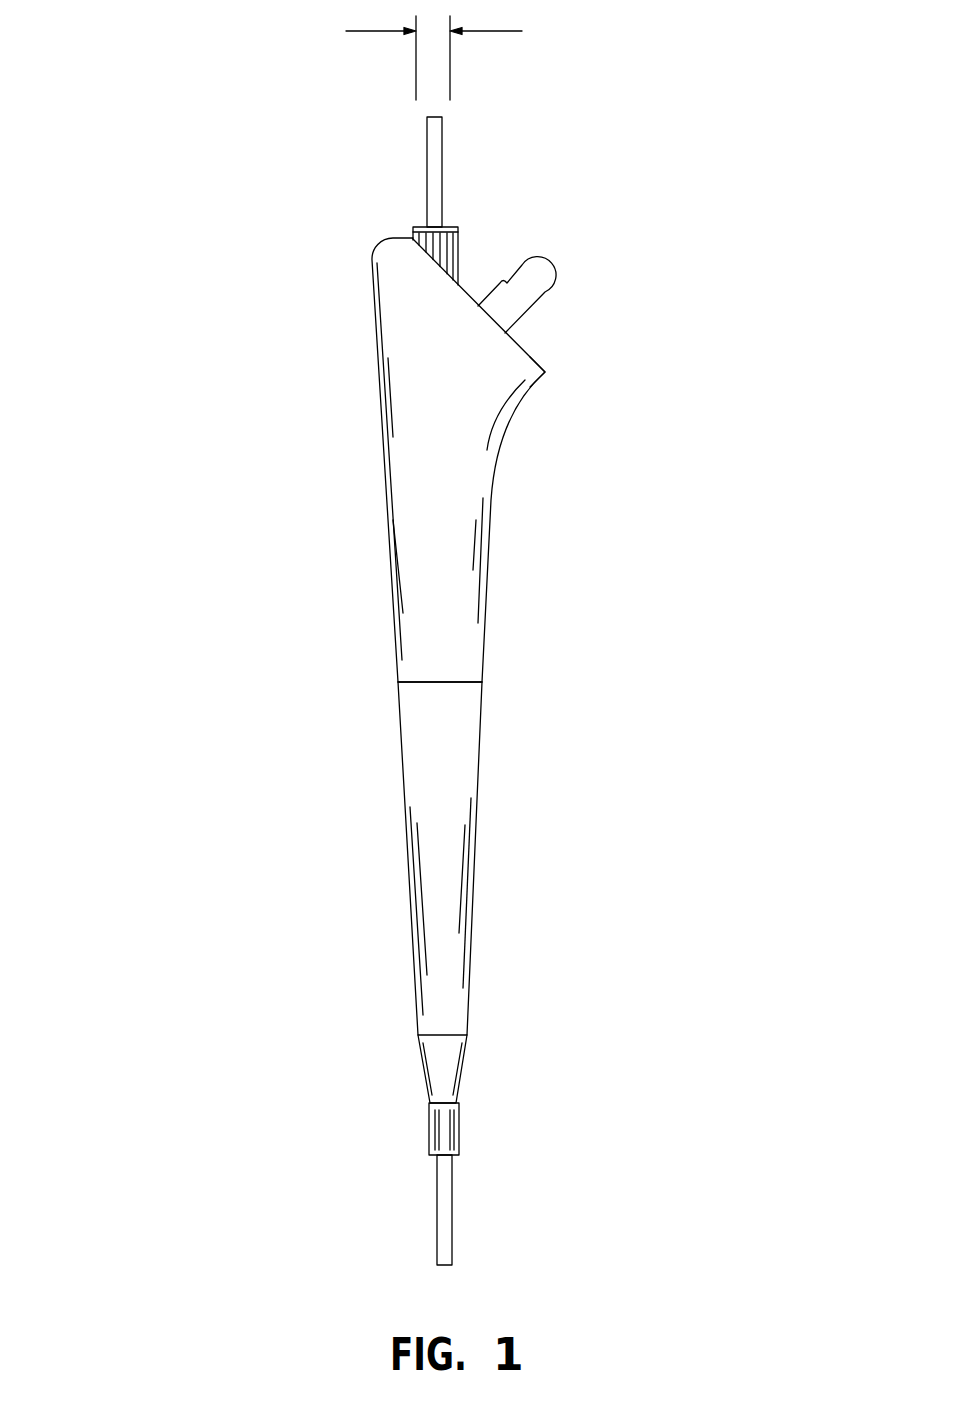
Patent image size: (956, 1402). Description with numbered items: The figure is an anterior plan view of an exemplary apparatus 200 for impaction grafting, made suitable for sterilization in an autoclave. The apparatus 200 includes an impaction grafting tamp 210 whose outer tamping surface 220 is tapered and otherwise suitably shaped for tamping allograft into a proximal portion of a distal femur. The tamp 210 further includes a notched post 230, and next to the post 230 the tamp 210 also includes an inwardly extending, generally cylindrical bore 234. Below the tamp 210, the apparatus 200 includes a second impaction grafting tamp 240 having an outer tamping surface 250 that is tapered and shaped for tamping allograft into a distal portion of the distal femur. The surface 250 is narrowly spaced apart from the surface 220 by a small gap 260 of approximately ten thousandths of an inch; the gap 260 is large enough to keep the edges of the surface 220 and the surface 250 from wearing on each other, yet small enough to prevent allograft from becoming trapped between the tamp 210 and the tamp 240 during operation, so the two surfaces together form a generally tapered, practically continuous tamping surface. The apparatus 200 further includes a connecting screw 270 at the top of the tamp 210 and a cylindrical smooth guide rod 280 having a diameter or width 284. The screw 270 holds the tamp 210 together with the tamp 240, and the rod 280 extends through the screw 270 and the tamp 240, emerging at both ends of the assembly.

The apparatus 200 is at (160, 263).
The impaction grafting tamp 210 is at (242, 485).
The tamping surface 220 is at (470, 370).
The notched post 230 is at (551, 291).
The bore 234 is at (556, 349).
The impaction grafting tamp 240 is at (304, 937).
The tamping surface 250 is at (472, 772).
The gap 260 is at (443, 680).
The connecting screw 270 is at (479, 218).
The guide rod 280 is at (427, 155).
The width 284 is at (496, 31).